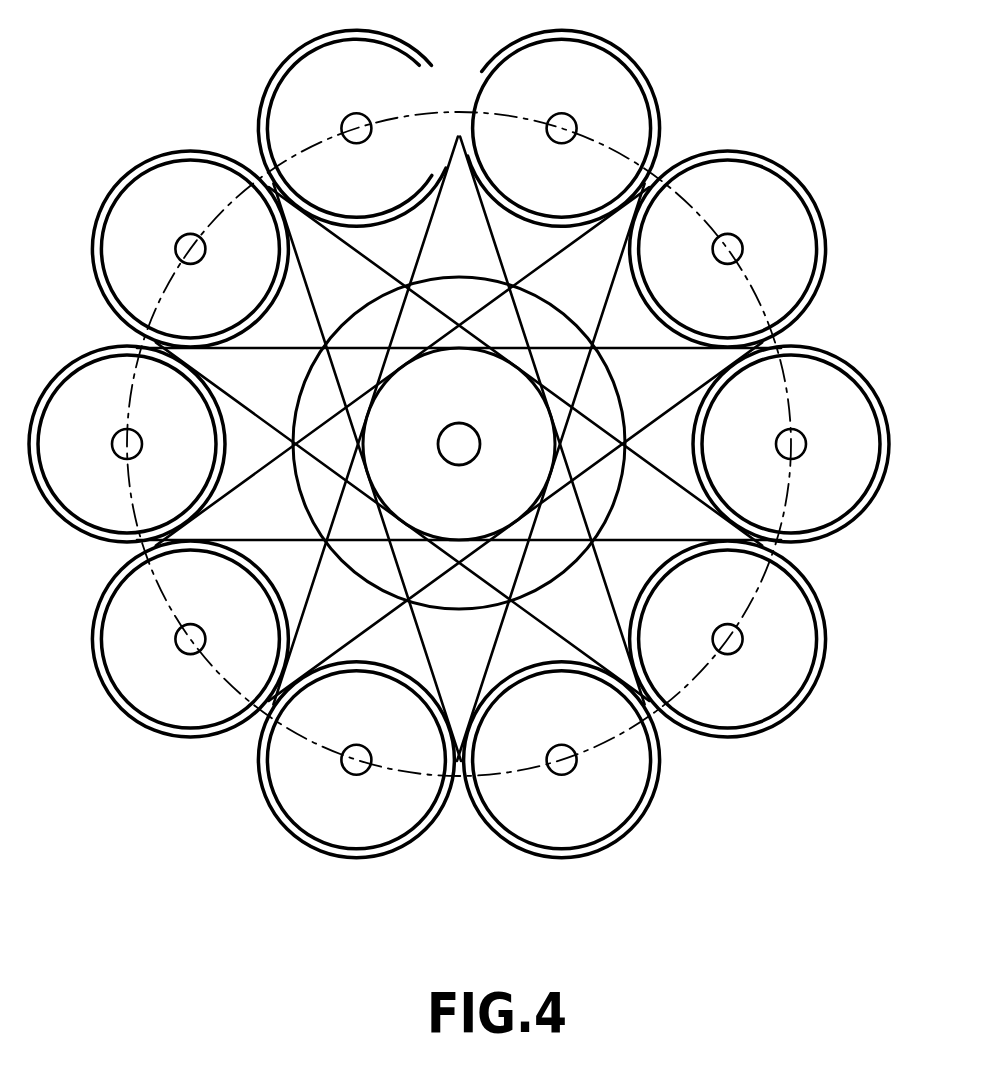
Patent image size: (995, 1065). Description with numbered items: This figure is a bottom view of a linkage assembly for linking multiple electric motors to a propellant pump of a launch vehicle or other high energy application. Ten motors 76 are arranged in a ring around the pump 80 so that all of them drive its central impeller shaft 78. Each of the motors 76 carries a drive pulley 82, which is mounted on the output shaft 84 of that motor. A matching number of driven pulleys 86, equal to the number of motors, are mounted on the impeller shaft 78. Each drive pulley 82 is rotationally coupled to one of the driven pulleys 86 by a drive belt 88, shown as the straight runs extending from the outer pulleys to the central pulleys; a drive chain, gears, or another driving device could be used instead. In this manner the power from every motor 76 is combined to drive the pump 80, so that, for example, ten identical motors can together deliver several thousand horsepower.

The motors 76 is at (378, 822).
The impeller shaft 78 is at (474, 430).
The pump 80 is at (612, 505).
The drive pulley 82 is at (120, 707).
The output shaft 84 is at (182, 650).
The driven pulley 86 is at (558, 443).
The drive belt 88 is at (273, 265).